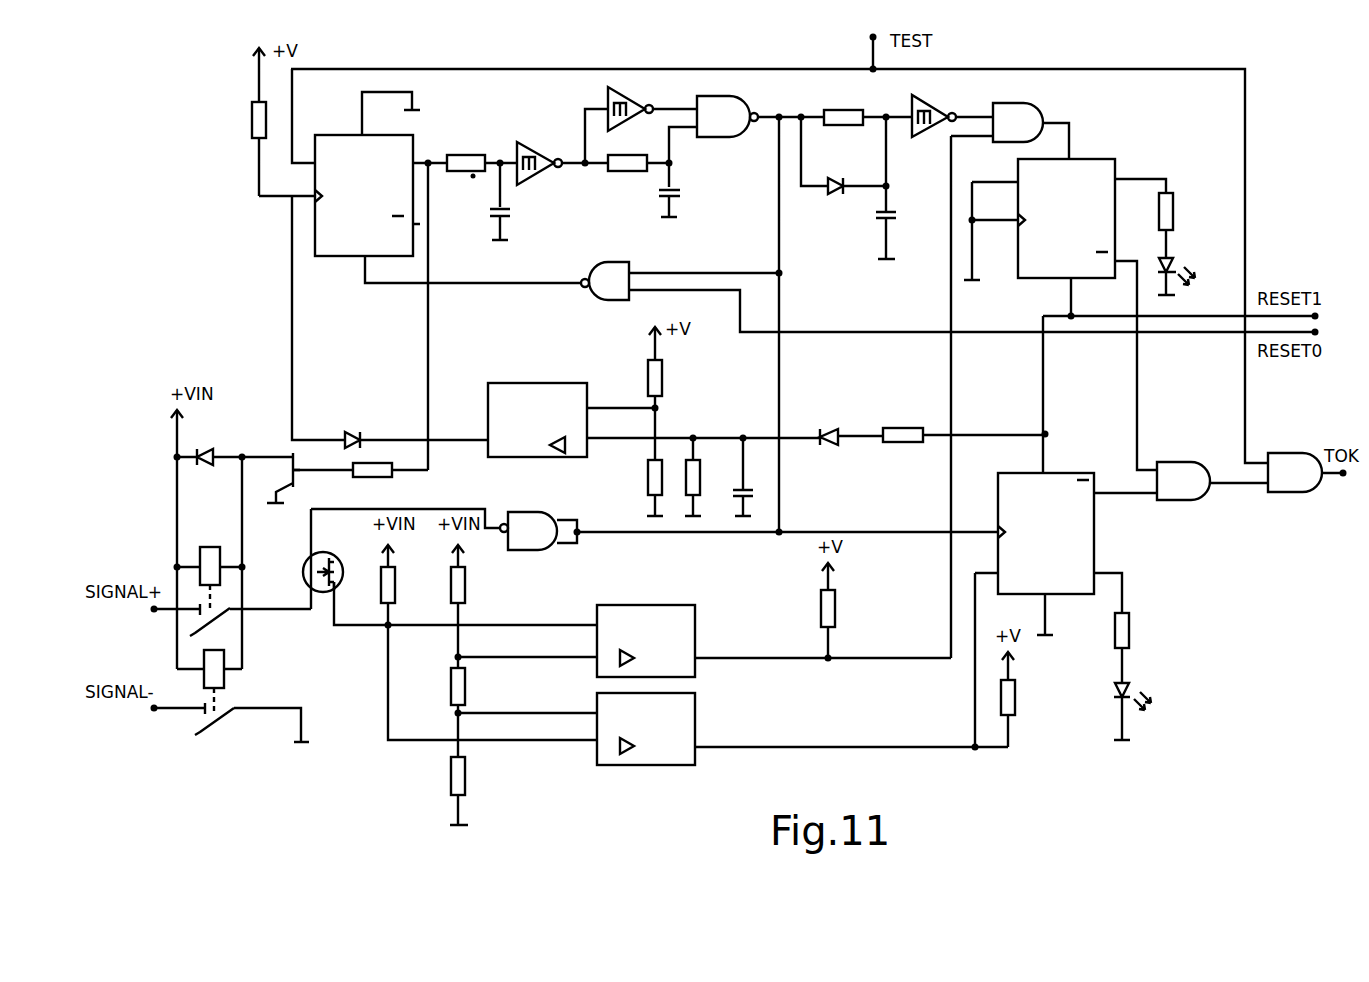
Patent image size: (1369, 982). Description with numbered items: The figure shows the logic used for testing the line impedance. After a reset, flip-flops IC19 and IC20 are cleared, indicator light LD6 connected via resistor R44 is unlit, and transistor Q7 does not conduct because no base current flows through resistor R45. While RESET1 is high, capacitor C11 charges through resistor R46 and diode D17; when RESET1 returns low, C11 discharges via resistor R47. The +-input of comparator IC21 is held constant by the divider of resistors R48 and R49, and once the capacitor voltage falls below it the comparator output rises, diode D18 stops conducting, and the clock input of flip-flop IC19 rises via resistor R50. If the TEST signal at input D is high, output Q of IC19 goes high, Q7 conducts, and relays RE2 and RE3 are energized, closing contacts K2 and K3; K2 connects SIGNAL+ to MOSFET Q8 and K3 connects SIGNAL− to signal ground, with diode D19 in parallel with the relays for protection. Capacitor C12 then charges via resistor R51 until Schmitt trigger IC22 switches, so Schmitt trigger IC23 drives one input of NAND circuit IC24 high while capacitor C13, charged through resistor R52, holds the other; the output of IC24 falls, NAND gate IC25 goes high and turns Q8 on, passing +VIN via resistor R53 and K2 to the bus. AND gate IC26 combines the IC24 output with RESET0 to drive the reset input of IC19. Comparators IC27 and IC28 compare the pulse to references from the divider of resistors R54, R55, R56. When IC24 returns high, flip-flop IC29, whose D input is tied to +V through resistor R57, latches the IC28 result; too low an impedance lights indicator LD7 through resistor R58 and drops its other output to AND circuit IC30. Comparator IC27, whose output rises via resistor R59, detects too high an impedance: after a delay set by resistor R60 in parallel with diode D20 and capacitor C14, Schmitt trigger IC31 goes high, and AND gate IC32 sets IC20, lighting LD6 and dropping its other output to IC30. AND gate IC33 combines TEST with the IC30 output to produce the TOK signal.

The resistor R50 is at (240, 120).
The flip-flop IC19 is at (361, 211).
The resistor R51 is at (465, 155).
The capacitor C12 is at (520, 210).
The Schmitt trigger IC22 is at (538, 148).
The resistor R52 is at (626, 174).
The Schmitt trigger IC23 is at (604, 99).
The capacitor C13 is at (684, 176).
The NAND circuit IC24 is at (740, 102).
The AND gate IC26 is at (608, 265).
The resistor R60 is at (843, 106).
The diode D20 is at (842, 175).
The capacitor C14 is at (901, 207).
The Schmitt trigger IC31 is at (935, 102).
The AND gate IC32 is at (1018, 105).
The flip-flop IC20 is at (1076, 205).
The resistor R44 is at (1184, 211).
The indicator light LD6 is at (1182, 259).
The diode D19 is at (206, 447).
The transistor Q7 is at (274, 467).
The resistor R45 is at (372, 482).
The diode D18 is at (361, 428).
The relay RE2 is at (205, 566).
The contact K2 is at (215, 620).
The relay RE3 is at (232, 681).
The contact K3 is at (225, 720).
The MOSFET Q8 is at (323, 558).
The NAND gate IC25 is at (538, 517).
The comparator IC21 is at (537, 407).
The resistor R48 is at (672, 378).
The resistor R49 is at (633, 477).
The resistor R47 is at (710, 477).
The capacitor C11 is at (757, 480).
The diode D17 is at (834, 425).
The resistor R46 is at (903, 423).
The resistor R53 is at (405, 585).
The resistor R54 is at (475, 585).
The resistor R55 is at (476, 686).
The resistor R56 is at (476, 776).
The comparator IC27 is at (646, 626).
The comparator IC28 is at (646, 744).
The resistor R59 is at (846, 608).
The flip-flop IC29 is at (1048, 520).
The AND circuit IC30 is at (1183, 494).
The AND gate IC33 is at (1295, 485).
The resistor R58 is at (1140, 630).
The indicator LD7 is at (1137, 683).
The resistor R57 is at (1026, 697).